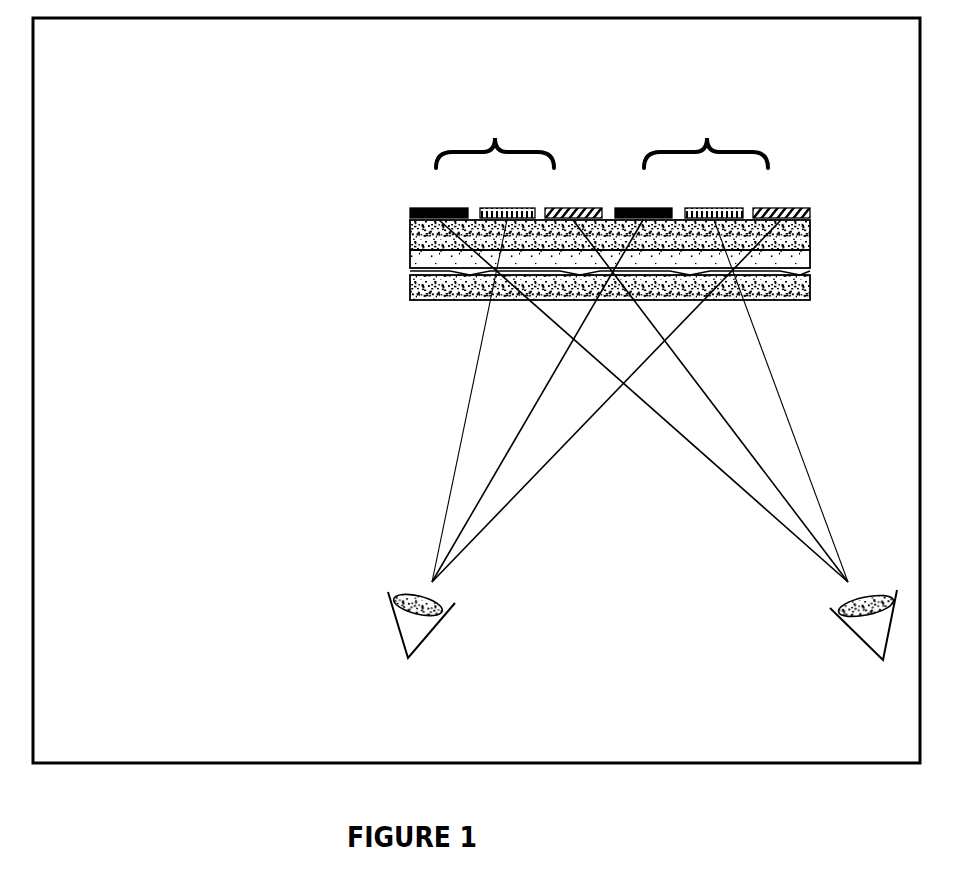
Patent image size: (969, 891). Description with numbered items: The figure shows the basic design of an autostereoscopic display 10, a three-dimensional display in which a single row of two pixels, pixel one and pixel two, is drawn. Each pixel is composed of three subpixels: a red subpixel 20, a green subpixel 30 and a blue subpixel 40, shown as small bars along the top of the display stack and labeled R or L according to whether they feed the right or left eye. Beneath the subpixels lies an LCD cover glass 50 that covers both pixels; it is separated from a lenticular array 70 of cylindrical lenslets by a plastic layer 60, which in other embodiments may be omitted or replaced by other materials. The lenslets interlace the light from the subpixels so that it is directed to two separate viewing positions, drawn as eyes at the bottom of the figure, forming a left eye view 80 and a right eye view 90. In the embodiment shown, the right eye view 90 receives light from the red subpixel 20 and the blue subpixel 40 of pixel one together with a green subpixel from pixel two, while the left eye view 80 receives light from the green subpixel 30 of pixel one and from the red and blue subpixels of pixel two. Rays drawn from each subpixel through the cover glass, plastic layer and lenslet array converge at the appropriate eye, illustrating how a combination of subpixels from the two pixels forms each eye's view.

The autostereoscopic display 10 is at (250, 186).
The red subpixel 20 is at (412, 210).
The green subpixel 30 is at (520, 207).
The blue subpixel 40 is at (593, 207).
The LCD cover glass 50 is at (408, 228).
The plastic layer 60 is at (410, 257).
The lenticular array 70 is at (437, 300).
The left eye view 80 is at (405, 645).
The right eye view 90 is at (876, 655).